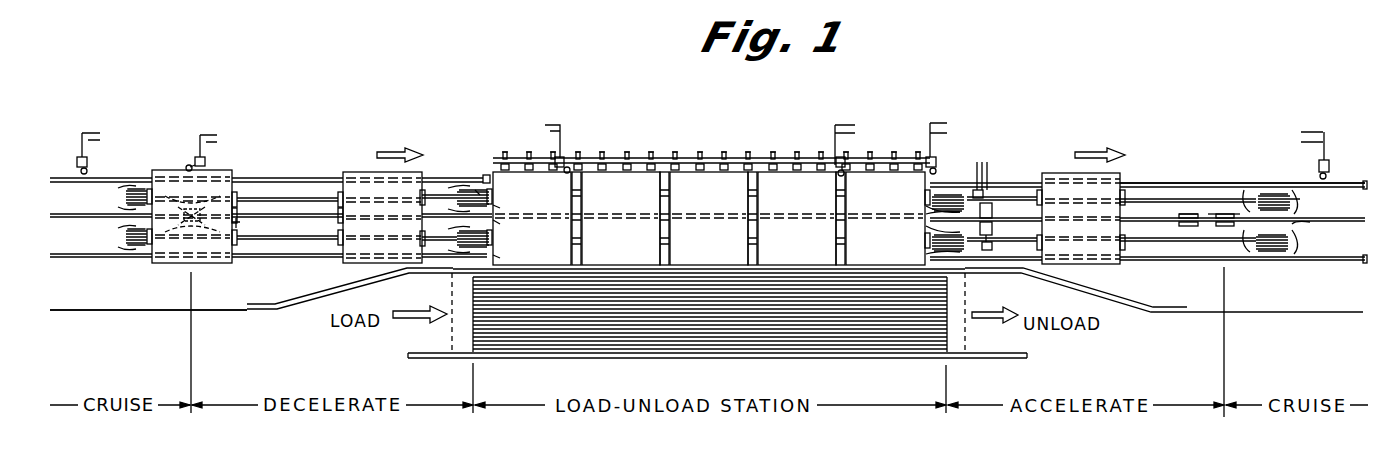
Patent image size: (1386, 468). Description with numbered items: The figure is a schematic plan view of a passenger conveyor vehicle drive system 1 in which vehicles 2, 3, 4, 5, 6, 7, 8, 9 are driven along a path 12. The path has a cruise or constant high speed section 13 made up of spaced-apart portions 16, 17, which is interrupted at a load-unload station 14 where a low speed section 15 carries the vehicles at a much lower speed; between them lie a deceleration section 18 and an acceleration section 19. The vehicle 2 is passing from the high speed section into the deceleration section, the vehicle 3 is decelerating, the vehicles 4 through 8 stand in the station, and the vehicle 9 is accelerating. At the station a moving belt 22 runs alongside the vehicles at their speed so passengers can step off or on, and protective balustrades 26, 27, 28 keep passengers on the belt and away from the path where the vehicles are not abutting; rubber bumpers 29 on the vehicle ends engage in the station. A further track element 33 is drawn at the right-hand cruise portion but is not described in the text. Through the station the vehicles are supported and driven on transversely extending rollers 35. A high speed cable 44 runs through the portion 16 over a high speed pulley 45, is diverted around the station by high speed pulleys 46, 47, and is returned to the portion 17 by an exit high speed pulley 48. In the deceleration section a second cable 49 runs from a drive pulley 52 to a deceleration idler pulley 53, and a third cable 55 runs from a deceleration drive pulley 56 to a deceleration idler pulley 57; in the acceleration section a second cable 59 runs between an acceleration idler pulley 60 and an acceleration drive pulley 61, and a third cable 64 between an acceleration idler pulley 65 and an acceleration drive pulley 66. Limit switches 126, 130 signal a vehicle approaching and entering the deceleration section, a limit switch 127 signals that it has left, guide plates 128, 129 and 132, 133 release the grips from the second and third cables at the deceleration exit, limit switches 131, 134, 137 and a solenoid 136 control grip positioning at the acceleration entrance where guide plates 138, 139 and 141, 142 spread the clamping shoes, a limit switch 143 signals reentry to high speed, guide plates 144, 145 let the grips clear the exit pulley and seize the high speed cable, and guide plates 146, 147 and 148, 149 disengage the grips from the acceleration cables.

The vehicle drive system 1 is at (906, 110).
The vehicle 2 is at (212, 175).
The vehicle 3 is at (360, 174).
The vehicle 4 is at (561, 246).
The vehicle 5 is at (624, 247).
The vehicle 6 is at (718, 248).
The vehicle 7 is at (801, 248).
The vehicle 8 is at (864, 248).
The vehicle 9 is at (1062, 175).
The path 12 is at (1314, 238).
The high speed section 13 is at (72, 238).
The load-unload station 14 is at (813, 401).
The low speed section 15 is at (716, 158).
The portion of the high speed section 16 is at (104, 196).
The portion of the high speed section 17 is at (1309, 200).
The deceleration section 18 is at (302, 188).
The acceleration section 19 is at (1158, 190).
The belt 22 is at (885, 333).
The protective balustrade 26 is at (273, 310).
The protective balustrade 27 is at (408, 352).
The protective balustrade 28 is at (1148, 312).
The bumper 29 is at (238, 190).
The top rail 33 is at (1351, 185).
The roller 35 is at (517, 156).
The high speed cable 44 is at (1356, 222).
The high speed pulley 45 is at (190, 228).
The high speed pulley 46 is at (240, 224).
The high speed pulley 47 is at (1184, 230).
The exit high speed pulley 48 is at (1225, 230).
The second cable 49 is at (271, 198).
The drive pulley 52 is at (137, 192).
The deceleration idler pulley 53 is at (463, 190).
The third cable 55 is at (291, 240).
The deceleration drive pulley 56 is at (136, 245).
The deceleration idler pulley 57 is at (462, 250).
The second cable 59 is at (1175, 200).
The acceleration idler pulley 60 is at (930, 201).
The acceleration drive pulley 61 is at (1259, 206).
The third cable 64 is at (1199, 240).
The acceleration idler pulley 65 is at (958, 240).
The acceleration drive pulley 66 is at (1265, 245).
The limit switch 126 is at (88, 160).
The limit switch 127 is at (566, 157).
The guide plate 128 is at (475, 190).
The guide plate 129 is at (494, 208).
The limit switch 130 is at (200, 165).
The limit switch 131 is at (834, 160).
The guide plate 132 is at (494, 222).
The guide plate 133 is at (494, 258).
The limit switch 134 is at (921, 128).
The solenoid 136 is at (994, 206).
The limit switch 137 is at (972, 191).
The guide plate 138 is at (930, 188).
The guide plate 139 is at (930, 213).
The guide plate 141 is at (930, 223).
The guide plate 142 is at (930, 250).
The limit switch 143 is at (1331, 167).
The guide plate 144 is at (1209, 213).
The guide plate 145 is at (1218, 233).
The guide plate 146 is at (1267, 196).
The guide plate 147 is at (1296, 216).
The guide plate 148 is at (1282, 248).
The guide plate 149 is at (1303, 234).